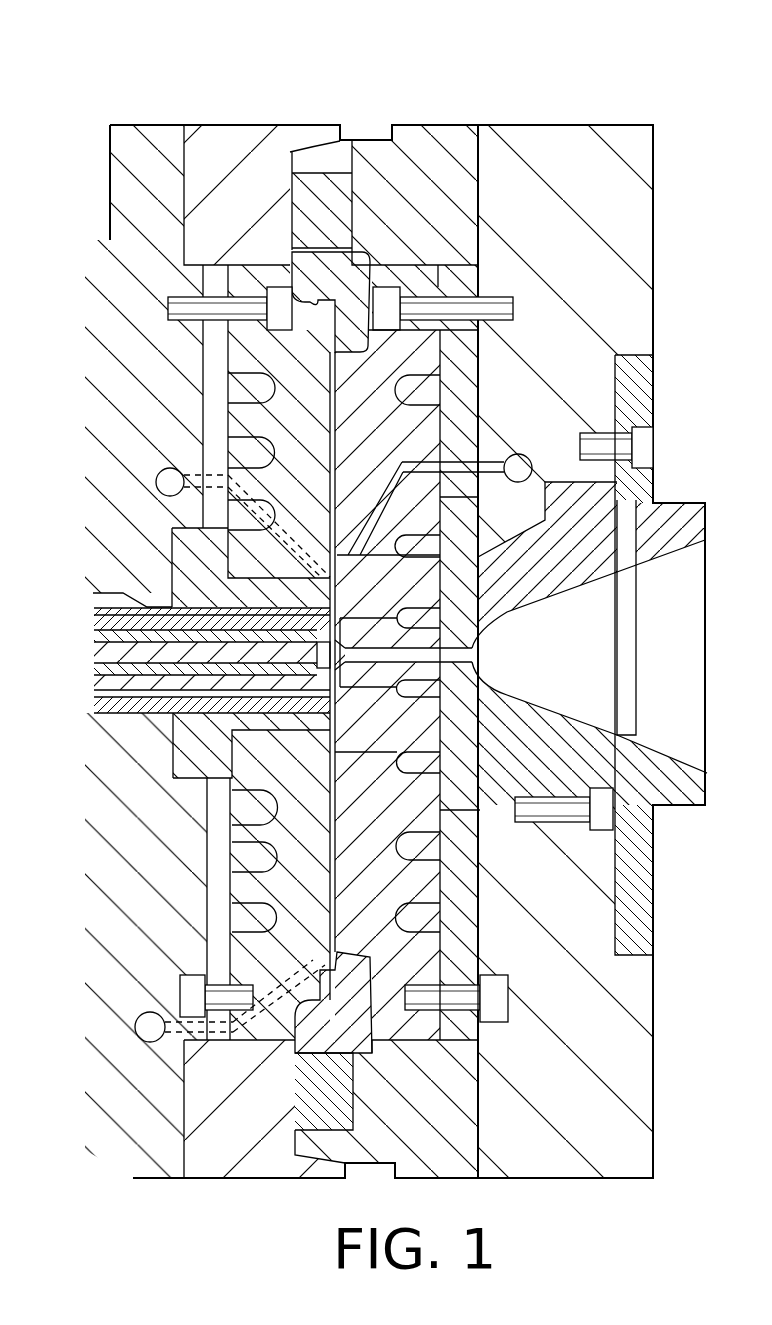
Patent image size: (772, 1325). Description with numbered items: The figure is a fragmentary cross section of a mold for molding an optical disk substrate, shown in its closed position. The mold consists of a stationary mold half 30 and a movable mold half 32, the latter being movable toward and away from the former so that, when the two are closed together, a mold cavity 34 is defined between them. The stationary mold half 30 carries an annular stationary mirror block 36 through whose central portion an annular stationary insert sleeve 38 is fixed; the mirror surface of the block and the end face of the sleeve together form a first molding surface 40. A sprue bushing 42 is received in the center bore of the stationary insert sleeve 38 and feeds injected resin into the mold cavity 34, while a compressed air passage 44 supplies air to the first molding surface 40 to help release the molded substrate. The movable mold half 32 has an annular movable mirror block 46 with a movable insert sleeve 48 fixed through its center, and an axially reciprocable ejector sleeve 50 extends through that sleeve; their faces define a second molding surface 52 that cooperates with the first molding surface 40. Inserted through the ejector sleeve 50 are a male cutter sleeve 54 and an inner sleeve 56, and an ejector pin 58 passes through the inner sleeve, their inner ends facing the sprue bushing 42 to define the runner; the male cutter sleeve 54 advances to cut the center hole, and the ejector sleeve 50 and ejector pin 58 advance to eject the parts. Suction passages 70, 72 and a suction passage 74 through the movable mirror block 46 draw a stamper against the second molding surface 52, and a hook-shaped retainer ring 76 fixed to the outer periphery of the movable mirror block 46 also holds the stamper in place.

The stationary mold half 30 is at (484, 86).
The movable mold half 32 is at (140, 100).
The mold cavity 34 is at (335, 440).
The stationary mirror block 36 is at (422, 955).
The stationary insert sleeve 38 is at (653, 808).
The first molding surface 40 is at (420, 900).
The sprue bushing 42 is at (573, 573).
The compressed air passage 44 is at (522, 456).
The movable mirror block 46 is at (300, 852).
The movable insert sleeve 48 is at (290, 718).
The ejector sleeve 50 is at (97, 705).
The second molding surface 52 is at (345, 925).
The male cutter sleeve 54 is at (108, 622).
The inner sleeve 56 is at (100, 688).
The ejector pin 58 is at (123, 652).
The suction passage 70 is at (170, 470).
The suction passage 72 is at (148, 1040).
The suction passage 74 is at (300, 962).
The hook-shaped retainer ring 76 is at (353, 258).